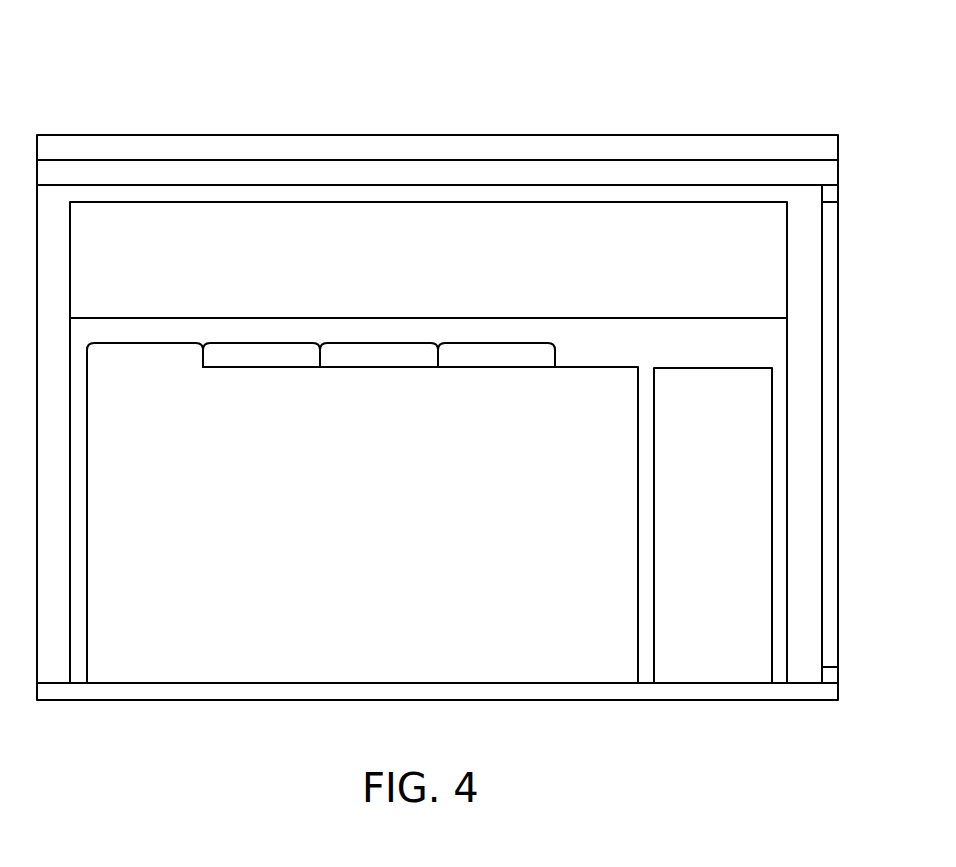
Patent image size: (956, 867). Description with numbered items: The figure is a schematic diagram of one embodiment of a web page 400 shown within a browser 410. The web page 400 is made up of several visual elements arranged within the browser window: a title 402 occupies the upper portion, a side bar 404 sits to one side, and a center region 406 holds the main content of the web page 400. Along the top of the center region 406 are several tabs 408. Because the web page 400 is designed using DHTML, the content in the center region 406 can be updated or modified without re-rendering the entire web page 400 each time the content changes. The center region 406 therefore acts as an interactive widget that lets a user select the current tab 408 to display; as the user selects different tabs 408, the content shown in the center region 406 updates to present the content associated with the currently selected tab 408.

The web page 400 is at (168, 96).
The title 402 is at (638, 240).
The side bar 404 is at (718, 641).
The center region 406 is at (205, 628).
The tabs 408 is at (192, 343).
The browser 410 is at (571, 134).